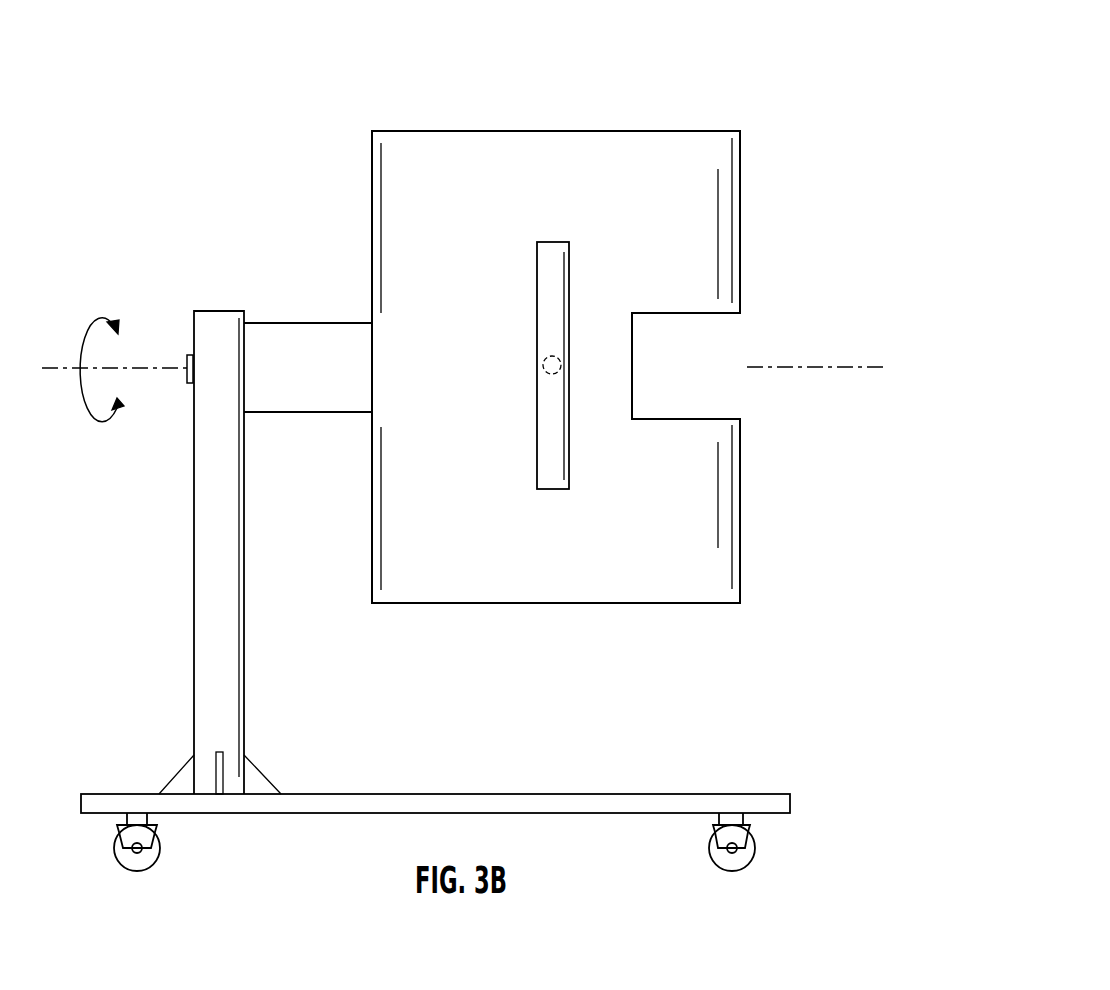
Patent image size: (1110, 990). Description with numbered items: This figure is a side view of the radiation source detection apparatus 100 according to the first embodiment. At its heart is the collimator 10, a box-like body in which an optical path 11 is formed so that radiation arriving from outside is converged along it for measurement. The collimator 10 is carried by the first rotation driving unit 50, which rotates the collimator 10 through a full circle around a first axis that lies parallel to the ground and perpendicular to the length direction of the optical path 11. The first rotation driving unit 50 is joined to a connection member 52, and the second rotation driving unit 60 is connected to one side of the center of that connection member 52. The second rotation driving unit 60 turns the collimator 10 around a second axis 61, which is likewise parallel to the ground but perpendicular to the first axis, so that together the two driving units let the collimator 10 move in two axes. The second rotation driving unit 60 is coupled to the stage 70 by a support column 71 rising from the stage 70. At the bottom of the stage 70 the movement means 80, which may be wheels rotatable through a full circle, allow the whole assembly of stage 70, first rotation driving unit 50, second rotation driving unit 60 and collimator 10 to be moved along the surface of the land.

The radiation source detection apparatus 100 is at (703, 73).
The collimator 10 is at (420, 131).
The optical path 11 is at (721, 396).
The first rotation driving unit 50 is at (563, 362).
The connection member 52 is at (320, 323).
The second rotation driving unit 60 is at (187, 364).
The second axis 61 is at (829, 367).
The stage 70 is at (718, 793).
The support column 71 is at (198, 625).
The movement means 80 is at (738, 863).